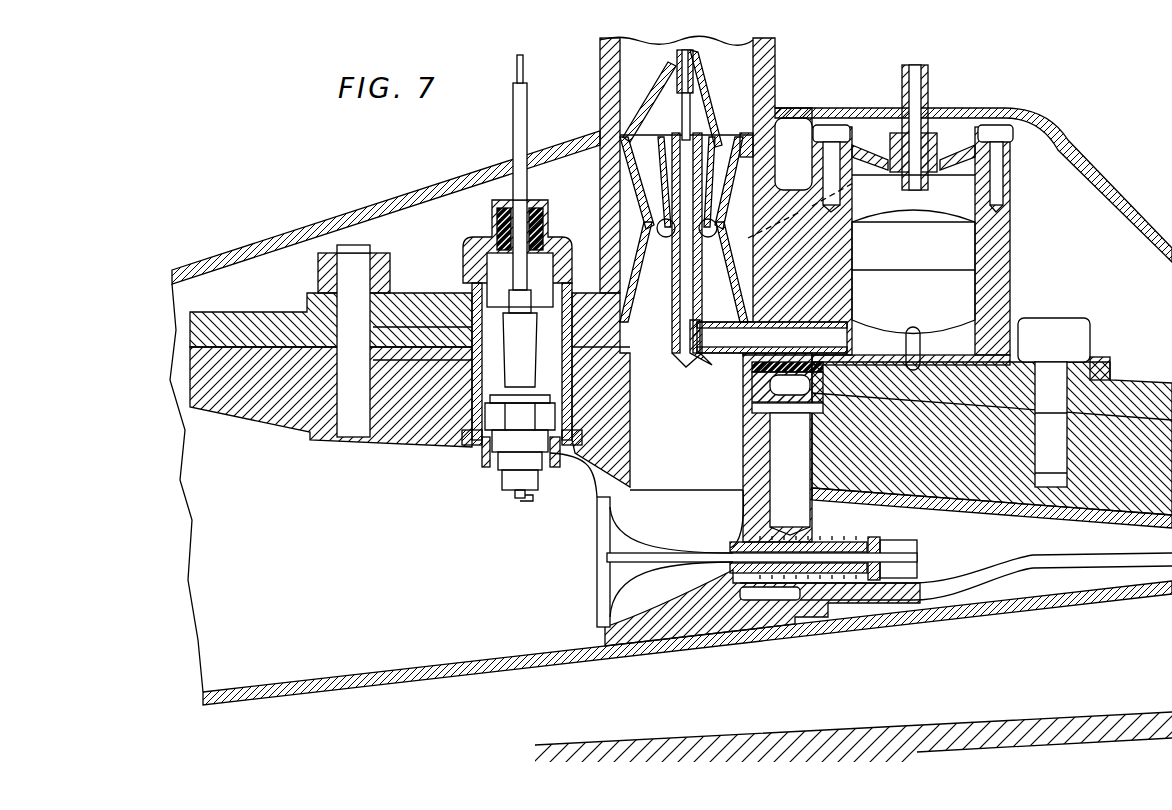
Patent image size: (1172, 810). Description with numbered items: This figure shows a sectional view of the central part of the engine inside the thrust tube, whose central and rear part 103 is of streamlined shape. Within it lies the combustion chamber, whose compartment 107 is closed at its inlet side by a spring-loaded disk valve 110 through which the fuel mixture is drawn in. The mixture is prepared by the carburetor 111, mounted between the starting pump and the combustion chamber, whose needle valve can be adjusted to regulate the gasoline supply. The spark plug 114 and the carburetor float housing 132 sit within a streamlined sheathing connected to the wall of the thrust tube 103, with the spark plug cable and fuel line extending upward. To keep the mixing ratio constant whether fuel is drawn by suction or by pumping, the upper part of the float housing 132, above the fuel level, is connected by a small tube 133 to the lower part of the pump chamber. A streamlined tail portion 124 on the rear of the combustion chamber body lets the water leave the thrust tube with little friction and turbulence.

The central and rear part of the thrust tube 103 is at (943, 740).
The combustion chamber compartment 107 is at (402, 579).
The spring-loaded disk valve 110 is at (597, 578).
The carburetor 111 is at (657, 157).
The spark plug 114 is at (450, 438).
The tail portion 124 is at (1097, 605).
The carburetor float housing 132 is at (995, 252).
The small tube 133 is at (843, 240).